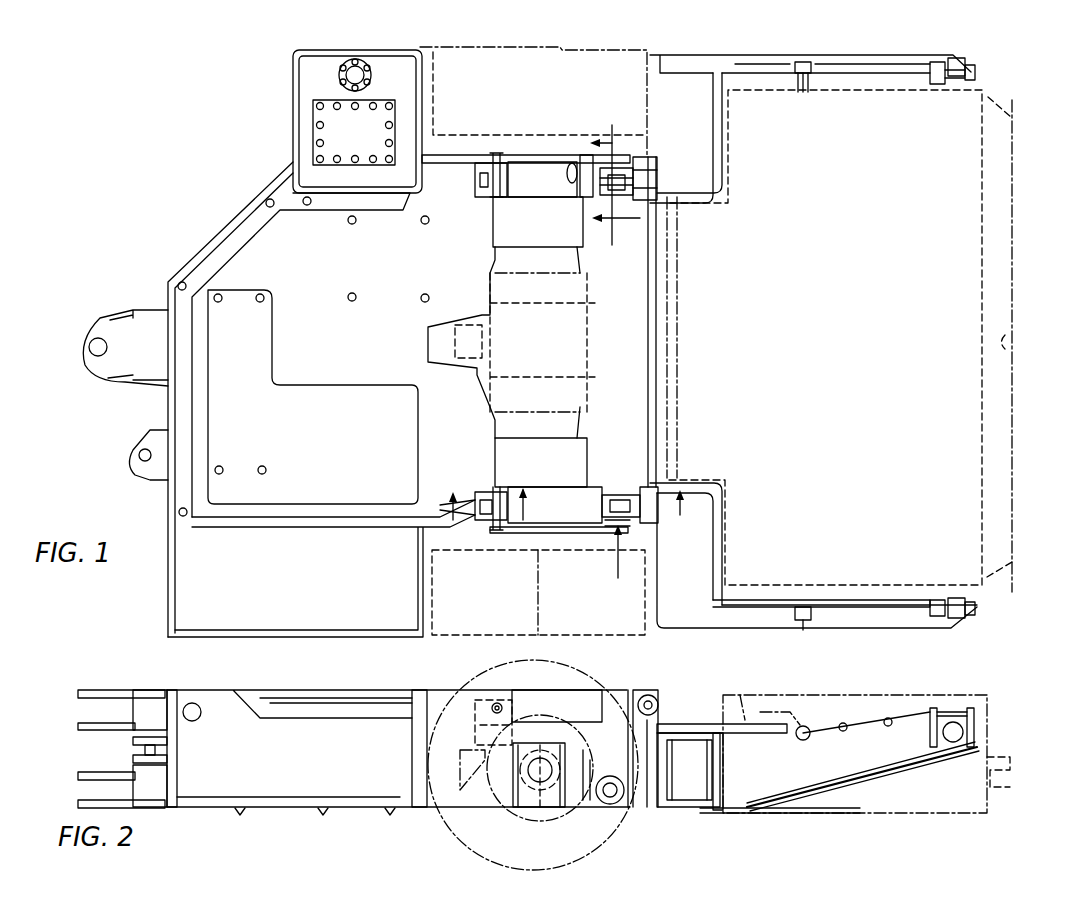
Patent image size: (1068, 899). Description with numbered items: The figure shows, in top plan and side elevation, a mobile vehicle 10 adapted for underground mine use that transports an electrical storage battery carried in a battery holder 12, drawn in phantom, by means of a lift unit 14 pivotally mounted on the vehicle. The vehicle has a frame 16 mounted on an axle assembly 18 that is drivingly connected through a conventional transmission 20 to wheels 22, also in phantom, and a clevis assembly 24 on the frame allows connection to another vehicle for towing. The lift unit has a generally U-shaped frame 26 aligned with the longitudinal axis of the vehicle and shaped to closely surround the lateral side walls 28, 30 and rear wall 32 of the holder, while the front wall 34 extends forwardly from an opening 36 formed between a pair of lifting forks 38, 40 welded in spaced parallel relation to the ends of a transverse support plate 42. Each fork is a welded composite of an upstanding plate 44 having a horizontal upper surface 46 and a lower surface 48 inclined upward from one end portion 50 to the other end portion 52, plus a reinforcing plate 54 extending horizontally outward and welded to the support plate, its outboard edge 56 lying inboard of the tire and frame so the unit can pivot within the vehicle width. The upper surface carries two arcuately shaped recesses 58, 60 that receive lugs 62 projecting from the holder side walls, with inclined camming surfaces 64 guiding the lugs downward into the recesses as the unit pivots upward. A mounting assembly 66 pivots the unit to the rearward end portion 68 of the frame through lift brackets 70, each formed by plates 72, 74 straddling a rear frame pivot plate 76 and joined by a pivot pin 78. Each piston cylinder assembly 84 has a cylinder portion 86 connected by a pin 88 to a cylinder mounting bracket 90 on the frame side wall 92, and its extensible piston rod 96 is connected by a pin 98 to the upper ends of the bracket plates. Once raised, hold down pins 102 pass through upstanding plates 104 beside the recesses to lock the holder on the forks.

In FIG. 1, the mobile vehicle 10 is at (203, 182).
In FIG. 1, the battery holder 12 is at (1010, 418).
In FIG. 2, the battery holder 12 is at (950, 700).
In FIG. 1, the lift unit 14 is at (975, 47).
In FIG. 2, the lift unit 14 is at (930, 785).
In FIG. 1, the frame 16 is at (197, 243).
In FIG. 1, the axle assembly 18 is at (495, 228).
In FIG. 2, the axle assembly 18 is at (540, 807).
In FIG. 1, the transmission 20 is at (480, 283).
In FIG. 2, the transmission 20 is at (465, 830).
In FIG. 1, the wheels 22 is at (440, 62).
In FIG. 2, the wheels 22 is at (600, 867).
In FIG. 1, the clevis assembly 24 is at (98, 310).
In FIG. 2, the clevis assembly 24 is at (72, 708).
In FIG. 1, the U-shaped frame 26 is at (640, 50).
In FIG. 2, the U-shaped frame 26 is at (712, 805).
In FIG. 1, the lateral side wall 28 is at (803, 95).
In FIG. 1, the lateral side wall 30 is at (755, 585).
In FIG. 2, the lateral side wall 30 is at (772, 712).
In FIG. 1, the rear wall 32 is at (680, 298).
In FIG. 1, the front wall 34 is at (1010, 252).
In FIG. 1, the opening 36 is at (978, 88).
In FIG. 1, the lifting fork 38 is at (870, 72).
In FIG. 1, the lifting fork 40 is at (840, 608).
In FIG. 2, the lifting fork 40 is at (742, 782).
In FIG. 1, the support plate 42 is at (648, 300).
In FIG. 2, the upstanding plate 44 is at (840, 760).
In FIG. 2, the upper surface 46 is at (925, 715).
In FIG. 2, the lower surface 48 is at (835, 790).
In FIG. 2, the end portion 50 is at (750, 802).
In FIG. 2, the end portion 52 is at (976, 733).
In FIG. 1, the reinforcing plate 54 is at (697, 73).
In FIG. 2, the reinforcing plate 54 is at (785, 805).
In FIG. 1, the outboard edge 56 is at (772, 60).
In FIG. 2, the arcuately shaped recess 58 is at (800, 738).
In FIG. 2, the arcuately shaped recess 60 is at (955, 742).
In FIG. 1, the lugs 62 is at (808, 60).
In FIG. 2, the lugs 62 is at (808, 725).
In FIG. 2, the camming surfaces 64 is at (845, 730).
In FIG. 1, the mounting assembly 66 is at (662, 237).
In FIG. 2, the mounting assembly 66 is at (628, 680).
In FIG. 1, the rearward end portion 68 is at (607, 370).
In FIG. 1, the lift bracket 70 is at (642, 158).
In FIG. 2, the lift bracket 70 is at (660, 697).
In FIG. 1, the plate 72 is at (655, 172).
In FIG. 2, the plate 72 is at (636, 800).
In FIG. 1, the plate 74 is at (690, 200).
In FIG. 1, the rear frame pivot plate 76 is at (585, 175).
In FIG. 2, the rear frame pivot plate 76 is at (588, 800).
In FIG. 1, the pivot pin 78 is at (572, 175).
In FIG. 2, the pivot pin 78 is at (610, 805).
In FIG. 1, the piston cylinder assembly 84 is at (542, 205).
In FIG. 2, the piston cylinder assembly 84 is at (508, 683).
In FIG. 1, the cylinder portion 86 is at (530, 170).
In FIG. 2, the cylinder portion 86 is at (540, 685).
In FIG. 1, the pin 88 is at (494, 195).
In FIG. 2, the pin 88 is at (492, 705).
In FIG. 1, the cylinder mounting bracket 90 is at (470, 190).
In FIG. 2, the cylinder mounting bracket 90 is at (450, 727).
In FIG. 1, the side wall 92 is at (453, 155).
In FIG. 2, the side wall 92 is at (417, 692).
In FIG. 1, the piston rod 96 is at (660, 180).
In FIG. 2, the piston rod 96 is at (634, 695).
In FIG. 1, the pin 98 is at (650, 482).
In FIG. 2, the pin 98 is at (670, 724).
In FIG. 1, the hold down pins 102 is at (952, 85).
In FIG. 2, the hold down pins 102 is at (976, 715).
In FIG. 1, the plates 104 is at (930, 70).
In FIG. 2, the plates 104 is at (905, 720).